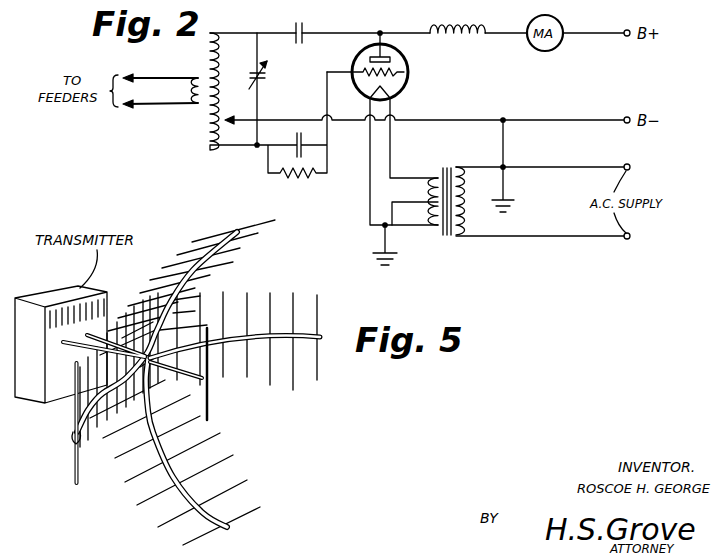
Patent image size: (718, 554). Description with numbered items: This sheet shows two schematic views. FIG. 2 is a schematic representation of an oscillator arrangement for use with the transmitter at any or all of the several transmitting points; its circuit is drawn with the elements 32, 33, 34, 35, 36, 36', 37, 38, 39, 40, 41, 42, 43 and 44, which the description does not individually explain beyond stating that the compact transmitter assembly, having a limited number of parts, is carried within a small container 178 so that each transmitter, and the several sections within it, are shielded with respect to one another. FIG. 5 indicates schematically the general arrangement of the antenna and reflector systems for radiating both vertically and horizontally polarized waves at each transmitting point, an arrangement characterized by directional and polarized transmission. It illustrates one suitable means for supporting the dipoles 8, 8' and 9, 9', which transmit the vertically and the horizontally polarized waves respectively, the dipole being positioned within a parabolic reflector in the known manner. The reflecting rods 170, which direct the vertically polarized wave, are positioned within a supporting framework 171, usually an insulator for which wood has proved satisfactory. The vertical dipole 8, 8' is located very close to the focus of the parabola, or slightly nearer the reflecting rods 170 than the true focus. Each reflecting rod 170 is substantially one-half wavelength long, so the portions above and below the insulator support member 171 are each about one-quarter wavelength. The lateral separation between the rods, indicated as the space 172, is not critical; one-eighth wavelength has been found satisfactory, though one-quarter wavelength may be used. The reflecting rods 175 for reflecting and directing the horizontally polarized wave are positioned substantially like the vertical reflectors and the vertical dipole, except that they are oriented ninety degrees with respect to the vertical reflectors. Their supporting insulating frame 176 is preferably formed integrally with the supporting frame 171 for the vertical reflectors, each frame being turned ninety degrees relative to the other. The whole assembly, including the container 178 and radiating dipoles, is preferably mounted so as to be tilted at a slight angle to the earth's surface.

In FIG. 2, the vacuum tube 32 is at (356, 87).
In FIG. 2, the tank coil 33 is at (222, 69).
In FIG. 2, the variable tuning capacitor 34 is at (268, 82).
In FIG. 2, the plate (anode) 35 is at (368, 58).
In FIG. 2, the blocking capacitor 36 is at (307, 47).
In FIG. 2, the grid 36' is at (380, 67).
In FIG. 2, the grid leak resistor and capacitor 37 is at (278, 166).
In FIG. 2, the filament (cathode) 38 is at (395, 92).
In FIG. 2, the filament transformer 39 is at (441, 169).
In FIG. 2, the coil tap 40 is at (231, 118).
In FIG. 2, the radio-frequency choke 41 is at (458, 42).
In FIG. 2, the B+ supply terminal 42 is at (625, 37).
In FIG. 2, the coupling coil 43 is at (189, 76).
In FIG. 2, the feeder leads 44 is at (150, 73).
In FIG. 5, the reflecting rods 170 is at (73, 480).
In FIG. 5, the supporting framework 171 is at (75, 418).
In FIG. 5, the space 172 is at (300, 355).
In FIG. 5, the reflecting rods 175 is at (233, 233).
In FIG. 5, the supporting insulating frame 176 is at (232, 268).
In FIG. 5, the container 178 is at (58, 290).
In FIG. 5, the vertical dipole 8 is at (209, 362).
In FIG. 5, the vertical dipole 8' is at (225, 414).
In FIG. 5, the horizontal dipole 9 is at (176, 391).
In FIG. 5, the horizontal dipole 9' is at (229, 389).